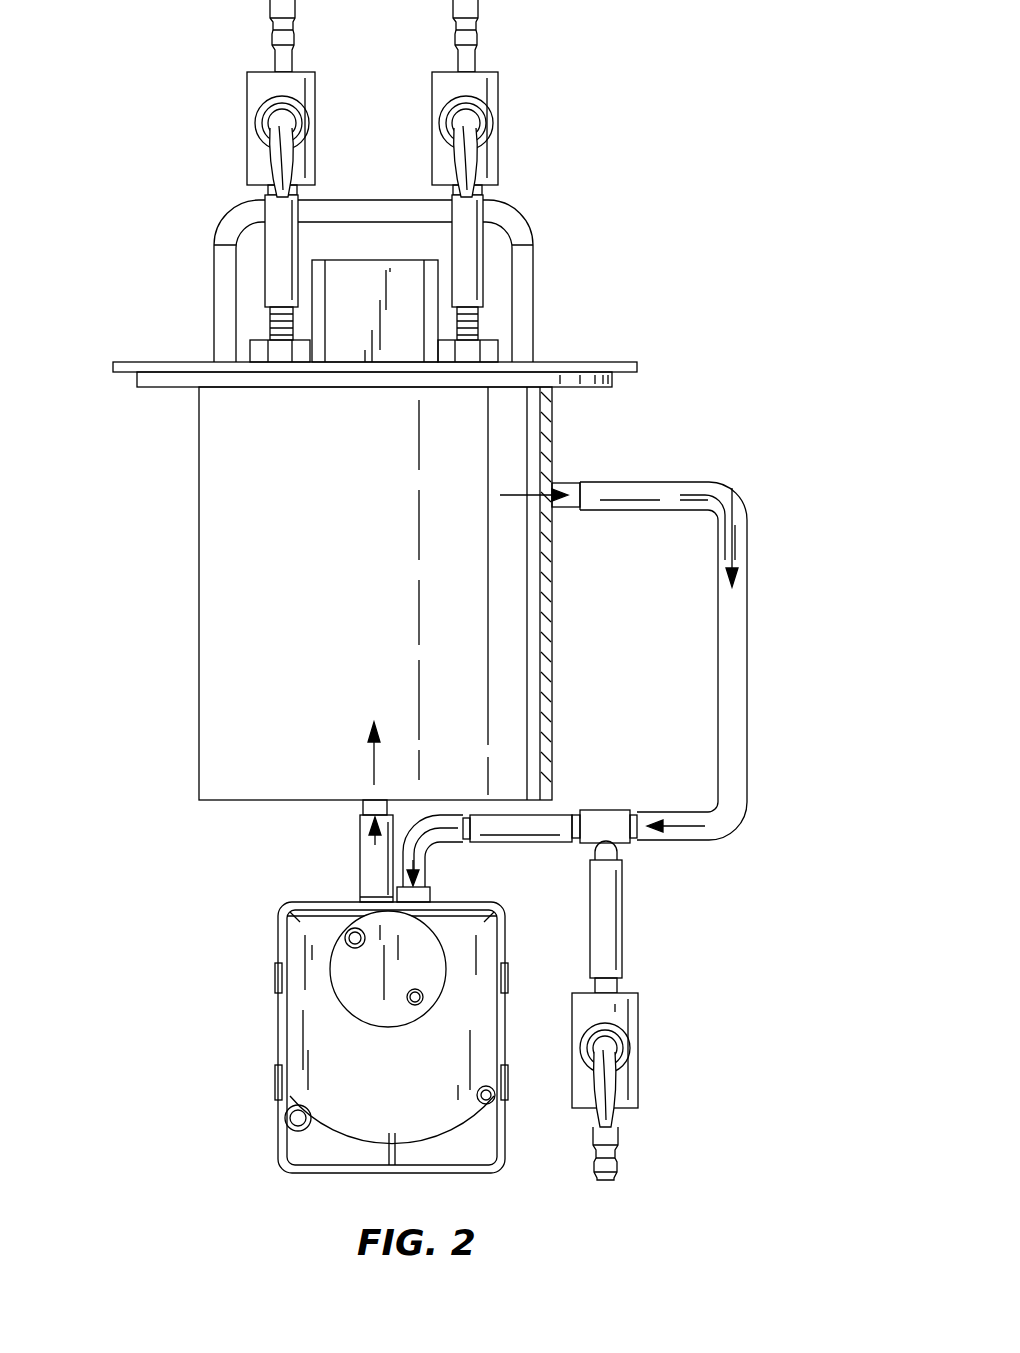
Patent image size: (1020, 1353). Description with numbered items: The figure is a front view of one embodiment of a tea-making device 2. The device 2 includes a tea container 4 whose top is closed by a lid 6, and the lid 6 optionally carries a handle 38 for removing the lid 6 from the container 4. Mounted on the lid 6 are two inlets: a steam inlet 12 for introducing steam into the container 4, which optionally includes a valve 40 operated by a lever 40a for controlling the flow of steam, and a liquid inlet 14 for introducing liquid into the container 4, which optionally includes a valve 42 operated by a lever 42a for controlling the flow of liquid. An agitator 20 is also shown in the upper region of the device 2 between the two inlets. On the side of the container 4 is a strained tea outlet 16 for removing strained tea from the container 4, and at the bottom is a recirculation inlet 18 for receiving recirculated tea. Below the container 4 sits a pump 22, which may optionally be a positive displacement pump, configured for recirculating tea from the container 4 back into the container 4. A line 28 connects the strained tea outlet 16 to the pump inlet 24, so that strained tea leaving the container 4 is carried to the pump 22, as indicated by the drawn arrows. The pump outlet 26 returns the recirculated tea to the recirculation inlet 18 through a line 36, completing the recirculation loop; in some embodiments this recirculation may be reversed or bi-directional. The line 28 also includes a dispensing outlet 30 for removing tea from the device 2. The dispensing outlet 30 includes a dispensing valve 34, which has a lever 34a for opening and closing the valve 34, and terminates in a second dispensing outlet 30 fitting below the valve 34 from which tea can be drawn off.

The device 2 is at (118, 155).
The tea container 4 is at (218, 472).
The lid 6 is at (637, 368).
The steam inlet 12 is at (270, 335).
The liquid inlet 14 is at (465, 338).
The strained tea outlet 16 is at (568, 487).
The recirculation inlet 18 is at (362, 808).
The agitator 20 is at (405, 272).
The pump 22 is at (325, 1044).
The pump inlet 24 is at (420, 898).
The pump outlet 26 is at (370, 897).
The line 28 is at (742, 655).
The dispensing outlet 30 is at (605, 898).
The dispensing valve 34 is at (649, 1053).
The lever 34a is at (608, 1090).
The line 36 is at (368, 857).
The handle 38 is at (390, 205).
The valve 40 is at (241, 170).
The lever 40a is at (265, 118).
The valve 42 is at (511, 170).
The lever 42a is at (492, 122).